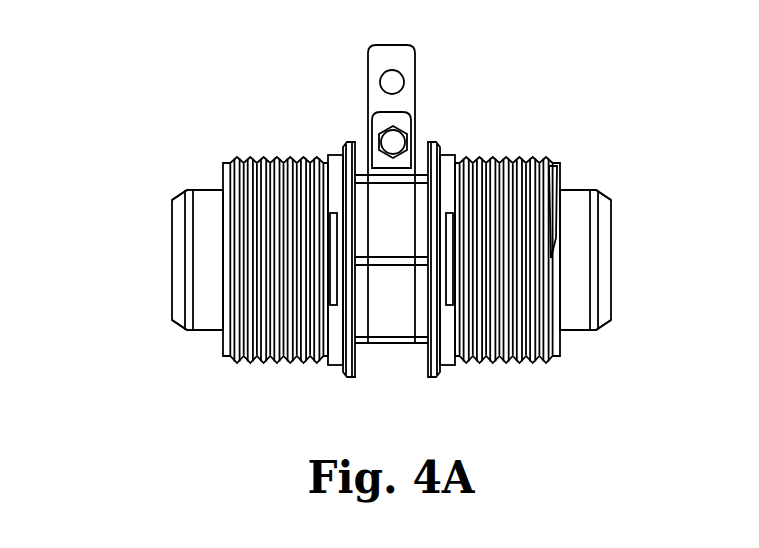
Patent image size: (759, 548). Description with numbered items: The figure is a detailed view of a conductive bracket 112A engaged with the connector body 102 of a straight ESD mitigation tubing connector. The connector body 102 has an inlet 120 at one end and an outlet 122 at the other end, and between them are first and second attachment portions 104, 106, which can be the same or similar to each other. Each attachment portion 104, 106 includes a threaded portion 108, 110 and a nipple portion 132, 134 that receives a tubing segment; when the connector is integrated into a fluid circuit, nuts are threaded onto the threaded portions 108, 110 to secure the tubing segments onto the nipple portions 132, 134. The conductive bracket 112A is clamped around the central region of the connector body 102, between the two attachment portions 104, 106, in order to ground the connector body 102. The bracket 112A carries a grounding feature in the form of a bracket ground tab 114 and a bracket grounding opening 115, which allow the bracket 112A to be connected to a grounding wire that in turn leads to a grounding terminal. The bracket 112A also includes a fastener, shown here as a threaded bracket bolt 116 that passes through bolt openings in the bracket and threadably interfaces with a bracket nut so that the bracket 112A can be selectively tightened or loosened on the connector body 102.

The connector body 102 is at (390, 238).
The first attachment portion 104 is at (283, 257).
The second attachment portion 106 is at (513, 362).
The threaded portion 108 is at (280, 357).
The threaded portion 110 is at (505, 273).
The conductive bracket 112A is at (397, 238).
The bracket ground tab 114 is at (380, 58).
The bracket grounding opening 115 is at (388, 86).
The threaded bracket bolt 116 is at (390, 143).
The inlet 120 is at (629, 245).
The outlet 122 is at (156, 245).
The nipple portion 132 is at (205, 320).
The nipple portion 134 is at (573, 323).